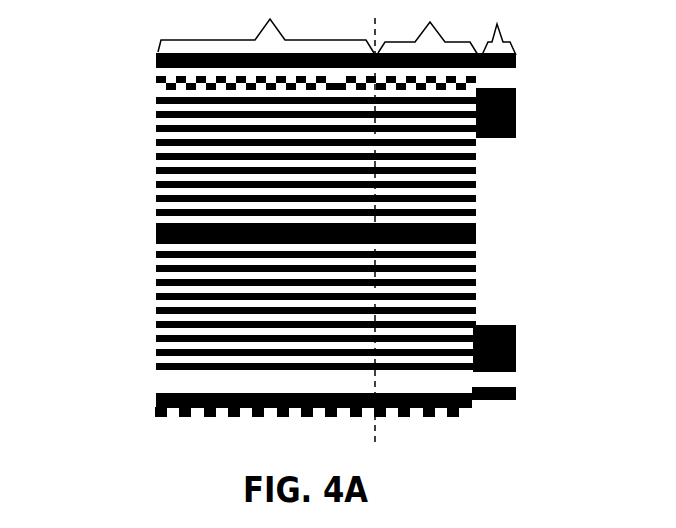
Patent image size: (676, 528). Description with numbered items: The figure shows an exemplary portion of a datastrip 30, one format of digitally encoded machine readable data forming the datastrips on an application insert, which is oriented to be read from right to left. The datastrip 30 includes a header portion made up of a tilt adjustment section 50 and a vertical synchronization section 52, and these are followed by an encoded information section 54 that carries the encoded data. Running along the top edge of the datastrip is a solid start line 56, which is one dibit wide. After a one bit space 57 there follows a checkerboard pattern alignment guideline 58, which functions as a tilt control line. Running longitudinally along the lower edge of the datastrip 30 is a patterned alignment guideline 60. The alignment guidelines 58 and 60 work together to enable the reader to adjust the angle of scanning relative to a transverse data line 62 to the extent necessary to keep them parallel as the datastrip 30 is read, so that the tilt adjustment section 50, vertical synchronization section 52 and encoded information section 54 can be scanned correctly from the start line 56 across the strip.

The datastrip 30 is at (140, 233).
The tilt adjustment section 50 is at (499, 27).
The vertical synchronization section 52 is at (428, 27).
The encoded information section 54 is at (266, 26).
The solid start line 56 is at (516, 62).
The one bit space 57 is at (157, 71).
The checkerboard pattern alignment guideline 58 is at (490, 82).
The patterned alignment guideline 60 is at (495, 418).
The transverse data line 62 is at (377, 221).